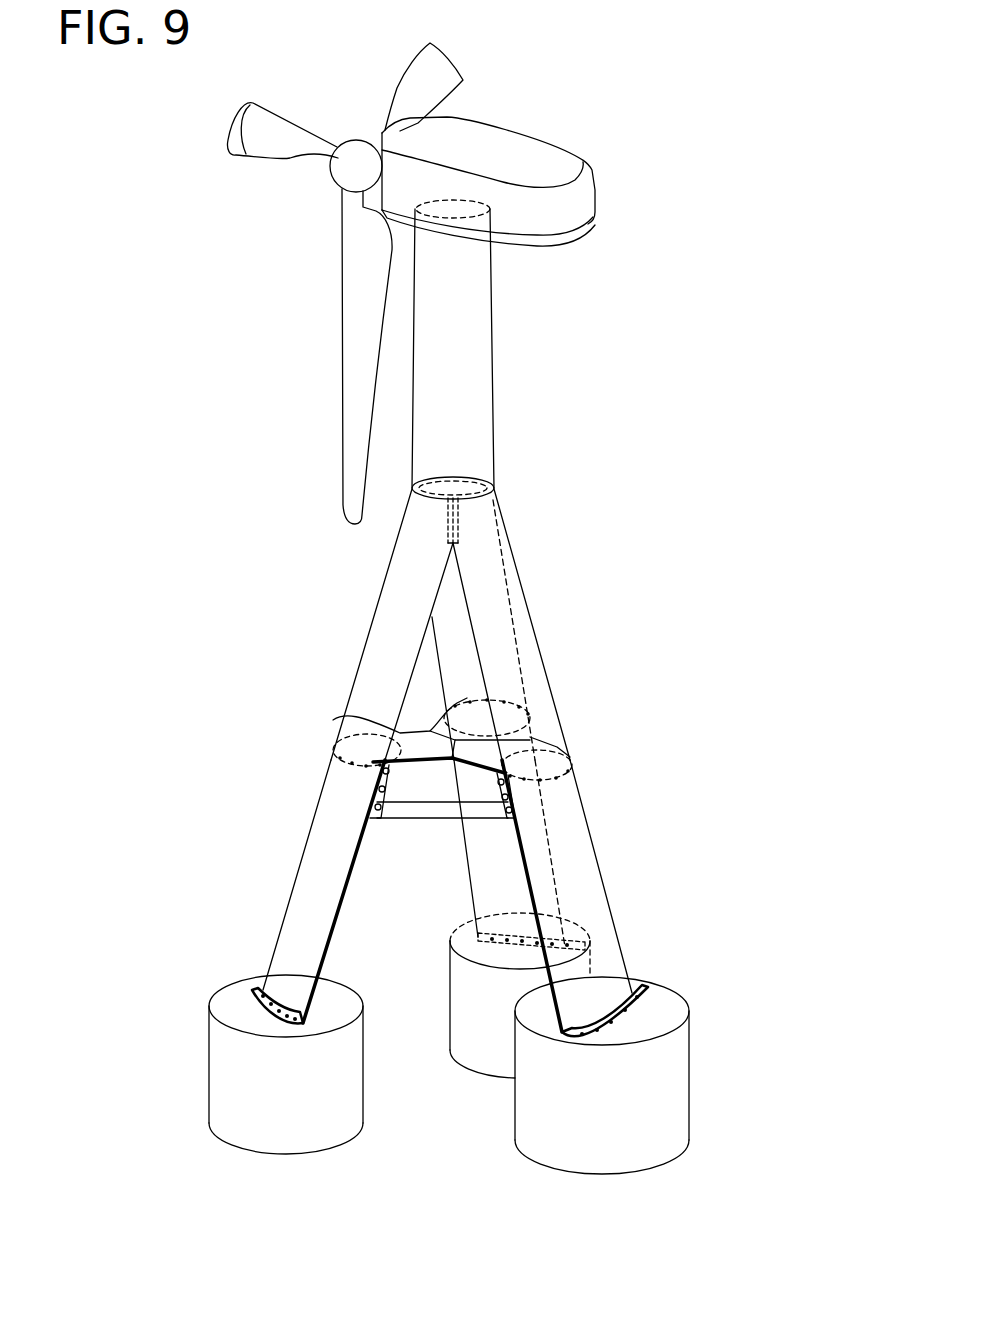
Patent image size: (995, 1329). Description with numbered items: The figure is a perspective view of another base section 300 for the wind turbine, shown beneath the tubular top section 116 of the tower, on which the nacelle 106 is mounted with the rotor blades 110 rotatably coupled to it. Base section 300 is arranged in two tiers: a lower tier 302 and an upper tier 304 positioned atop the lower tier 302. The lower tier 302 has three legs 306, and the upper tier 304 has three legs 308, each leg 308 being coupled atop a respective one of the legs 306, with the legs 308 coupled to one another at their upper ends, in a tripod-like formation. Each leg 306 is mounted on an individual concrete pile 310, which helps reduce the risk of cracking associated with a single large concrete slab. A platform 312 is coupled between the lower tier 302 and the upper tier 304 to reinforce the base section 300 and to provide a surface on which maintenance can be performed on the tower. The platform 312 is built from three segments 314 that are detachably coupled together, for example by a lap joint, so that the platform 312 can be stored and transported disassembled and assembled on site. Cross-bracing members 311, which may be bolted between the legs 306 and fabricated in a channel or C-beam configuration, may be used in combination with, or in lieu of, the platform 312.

The nacelle 106 is at (543, 143).
The blade 110 is at (343, 276).
The top section 116 is at (497, 344).
The base section 300 is at (592, 737).
The lower tier 302 is at (286, 883).
The upper tier 304 is at (347, 680).
The leg 306 is at (493, 851).
The leg 308 is at (398, 627).
The concrete pile 310 is at (480, 1053).
The cross-bracing member 311 is at (443, 808).
The platform 312 is at (425, 776).
The segment 314 is at (412, 748).